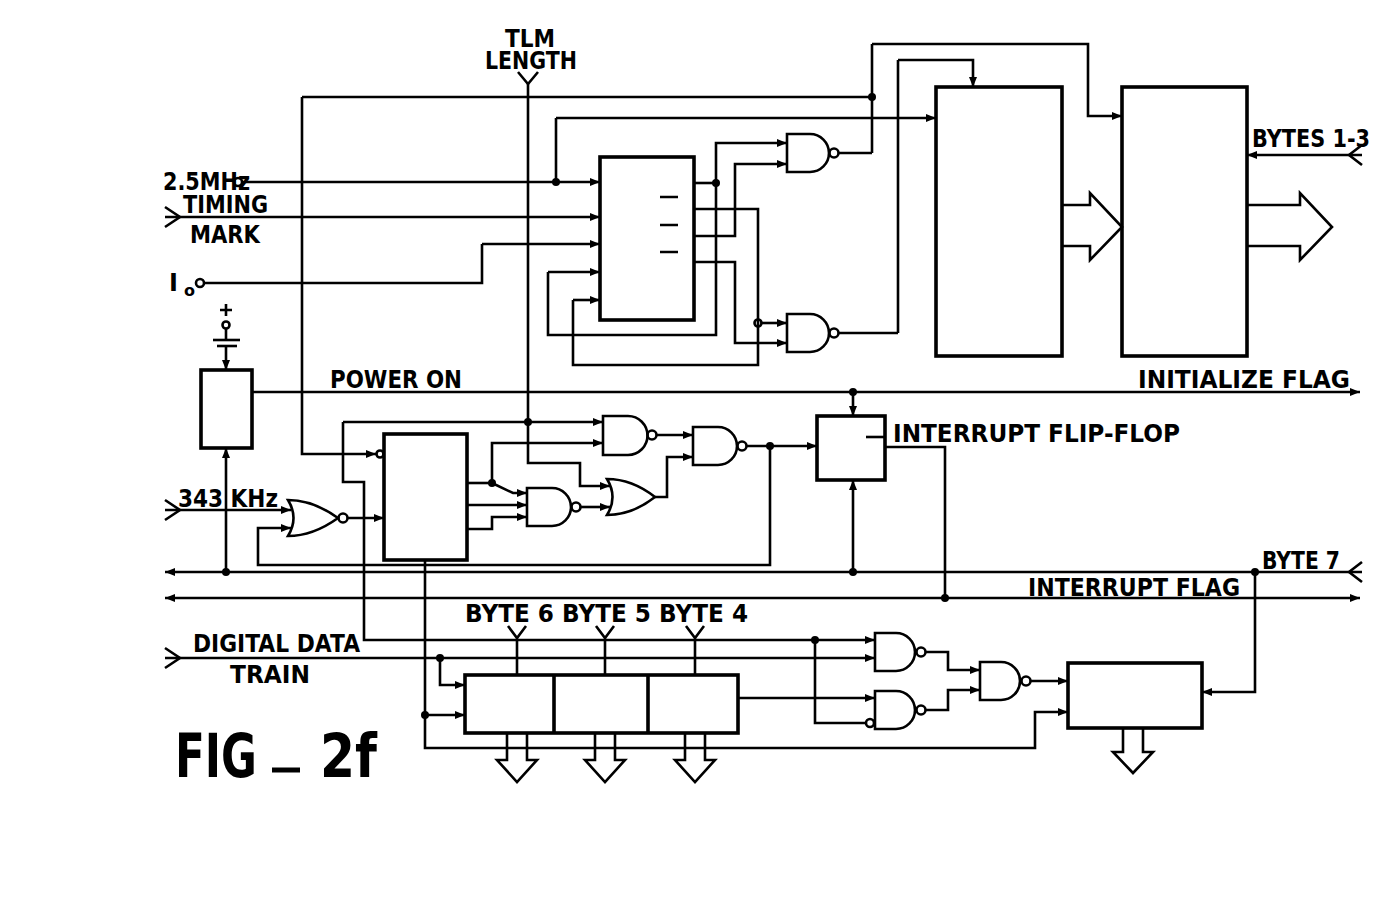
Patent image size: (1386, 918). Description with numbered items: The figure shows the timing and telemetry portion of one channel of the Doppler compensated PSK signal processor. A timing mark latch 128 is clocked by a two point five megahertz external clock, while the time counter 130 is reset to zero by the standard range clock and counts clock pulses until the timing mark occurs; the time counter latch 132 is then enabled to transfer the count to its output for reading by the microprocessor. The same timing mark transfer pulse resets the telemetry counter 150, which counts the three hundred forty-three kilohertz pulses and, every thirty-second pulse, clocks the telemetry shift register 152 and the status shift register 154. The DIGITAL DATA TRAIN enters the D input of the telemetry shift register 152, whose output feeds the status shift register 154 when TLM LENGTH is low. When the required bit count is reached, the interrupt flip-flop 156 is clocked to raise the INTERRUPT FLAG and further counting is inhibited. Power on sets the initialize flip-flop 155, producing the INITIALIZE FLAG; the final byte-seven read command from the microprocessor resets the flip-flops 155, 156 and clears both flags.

The timing mark latch 128 is at (628, 157).
The time counter 130 is at (999, 221).
The time counter latch 132 is at (1184, 221).
The telemetry counter 150 is at (467, 549).
The telemetry shift register 152 is at (738, 683).
The status shift register 154 is at (1155, 663).
The initialize flip-flop 155 is at (252, 370).
The interrupt flip-flop 156 is at (817, 424).